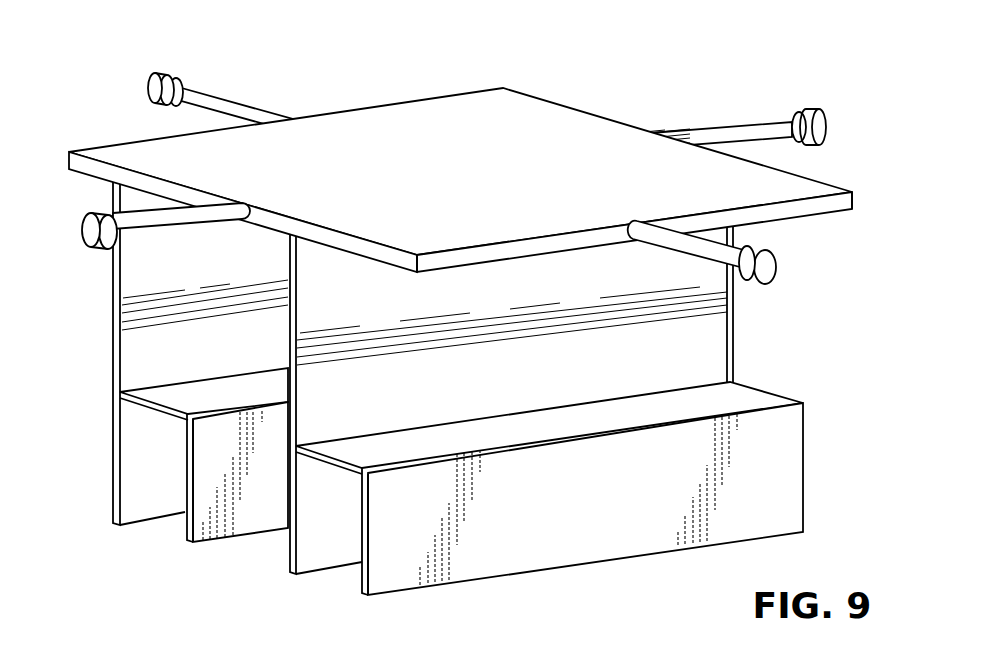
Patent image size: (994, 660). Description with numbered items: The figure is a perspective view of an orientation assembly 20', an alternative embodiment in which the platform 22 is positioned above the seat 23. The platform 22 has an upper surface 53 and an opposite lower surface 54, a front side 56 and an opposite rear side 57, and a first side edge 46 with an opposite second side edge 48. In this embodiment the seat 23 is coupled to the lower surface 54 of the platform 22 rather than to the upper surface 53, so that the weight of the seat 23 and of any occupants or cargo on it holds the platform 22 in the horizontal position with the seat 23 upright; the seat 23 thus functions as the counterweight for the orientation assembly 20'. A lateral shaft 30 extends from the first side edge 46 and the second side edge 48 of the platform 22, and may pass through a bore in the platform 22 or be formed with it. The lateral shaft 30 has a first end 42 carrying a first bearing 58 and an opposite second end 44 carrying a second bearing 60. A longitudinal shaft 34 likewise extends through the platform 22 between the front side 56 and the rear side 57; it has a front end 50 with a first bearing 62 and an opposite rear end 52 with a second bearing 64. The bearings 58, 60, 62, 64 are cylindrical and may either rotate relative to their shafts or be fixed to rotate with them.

The orientation assembly 20' is at (437, 301).
The platform 22 is at (457, 186).
The seat 23 is at (806, 447).
The lateral shaft 30 is at (748, 122).
The longitudinal shaft 34 is at (215, 95).
The first end 42 is at (112, 238).
The second end 44 is at (800, 112).
The first side edge 46 is at (283, 228).
The second side edge 48 is at (810, 178).
The front end 50 is at (750, 286).
The rear end 52 is at (170, 82).
The upper surface 53 is at (418, 122).
The lower surface 54 is at (375, 266).
The front side 56 is at (510, 256).
The rear side 57 is at (105, 148).
The first bearing 58 is at (84, 235).
The second bearing 60 is at (823, 108).
The first bearing 62 is at (780, 272).
The second bearing 64 is at (152, 78).